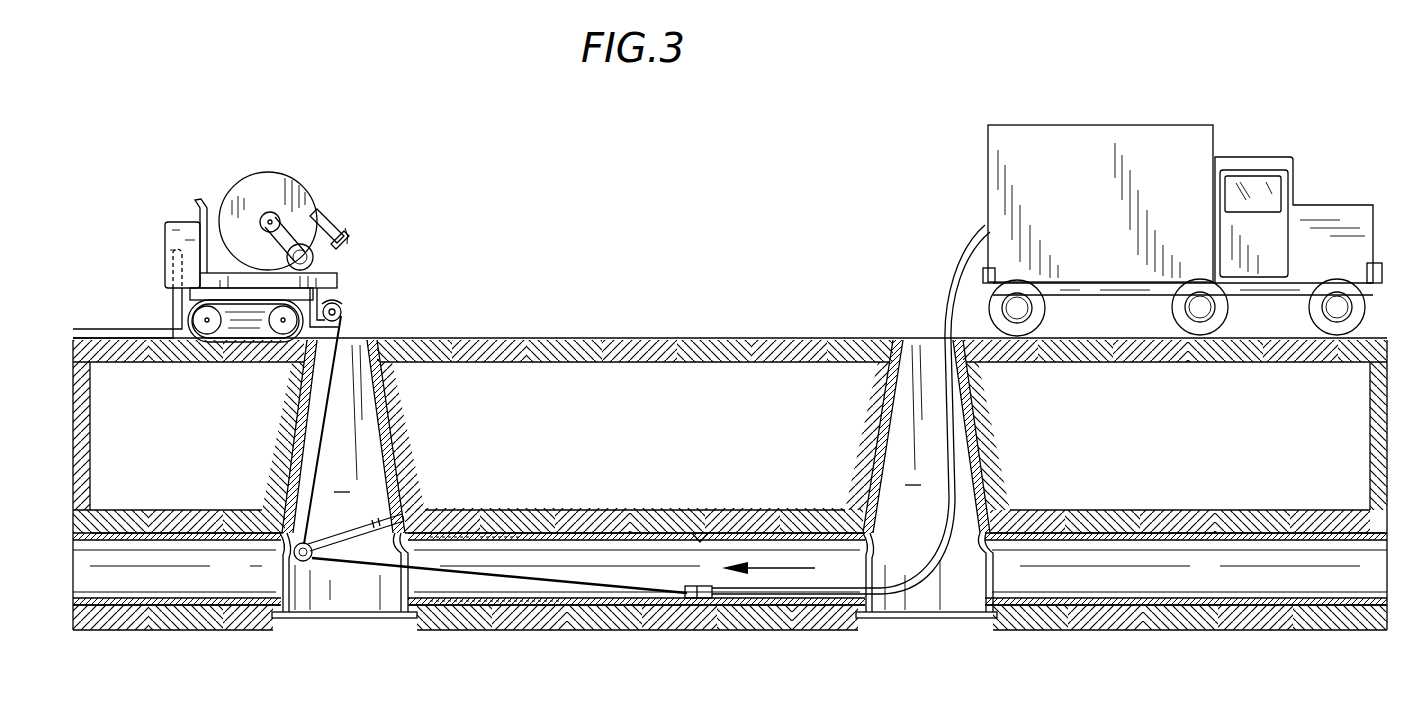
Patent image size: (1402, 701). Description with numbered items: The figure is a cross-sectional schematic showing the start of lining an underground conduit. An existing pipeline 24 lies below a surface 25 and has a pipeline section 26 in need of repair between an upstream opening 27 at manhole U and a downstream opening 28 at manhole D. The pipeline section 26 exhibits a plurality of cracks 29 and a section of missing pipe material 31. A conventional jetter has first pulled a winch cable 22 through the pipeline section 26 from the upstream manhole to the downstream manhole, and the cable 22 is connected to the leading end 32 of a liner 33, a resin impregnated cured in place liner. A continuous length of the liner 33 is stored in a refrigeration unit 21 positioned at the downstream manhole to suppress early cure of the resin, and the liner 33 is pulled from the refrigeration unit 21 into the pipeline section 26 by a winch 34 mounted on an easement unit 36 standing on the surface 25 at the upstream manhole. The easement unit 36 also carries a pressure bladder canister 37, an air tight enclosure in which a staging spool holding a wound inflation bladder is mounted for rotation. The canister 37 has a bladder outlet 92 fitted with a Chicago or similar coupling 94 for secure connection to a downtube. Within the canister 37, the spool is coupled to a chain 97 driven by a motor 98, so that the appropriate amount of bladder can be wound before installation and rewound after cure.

The refrigeration unit 21 is at (1085, 204).
The winch cable 22 is at (313, 457).
The existing pipeline 24 is at (150, 520).
The surface 25 is at (522, 334).
The pipeline section 26 is at (563, 530).
The upstream opening 27 is at (397, 580).
The downstream opening 28 is at (862, 623).
The cracks 29 is at (472, 530).
The section of missing pipe material 31 is at (700, 530).
The leading end 32 is at (720, 598).
The liner 33 is at (940, 523).
The winch 34 is at (345, 308).
The easement unit 36 is at (150, 240).
The pressure bladder canister 37 is at (248, 180).
The bladder outlet 92 is at (337, 222).
The coupling 94 is at (347, 232).
The chain 97 is at (310, 205).
The motor 98 is at (317, 260).